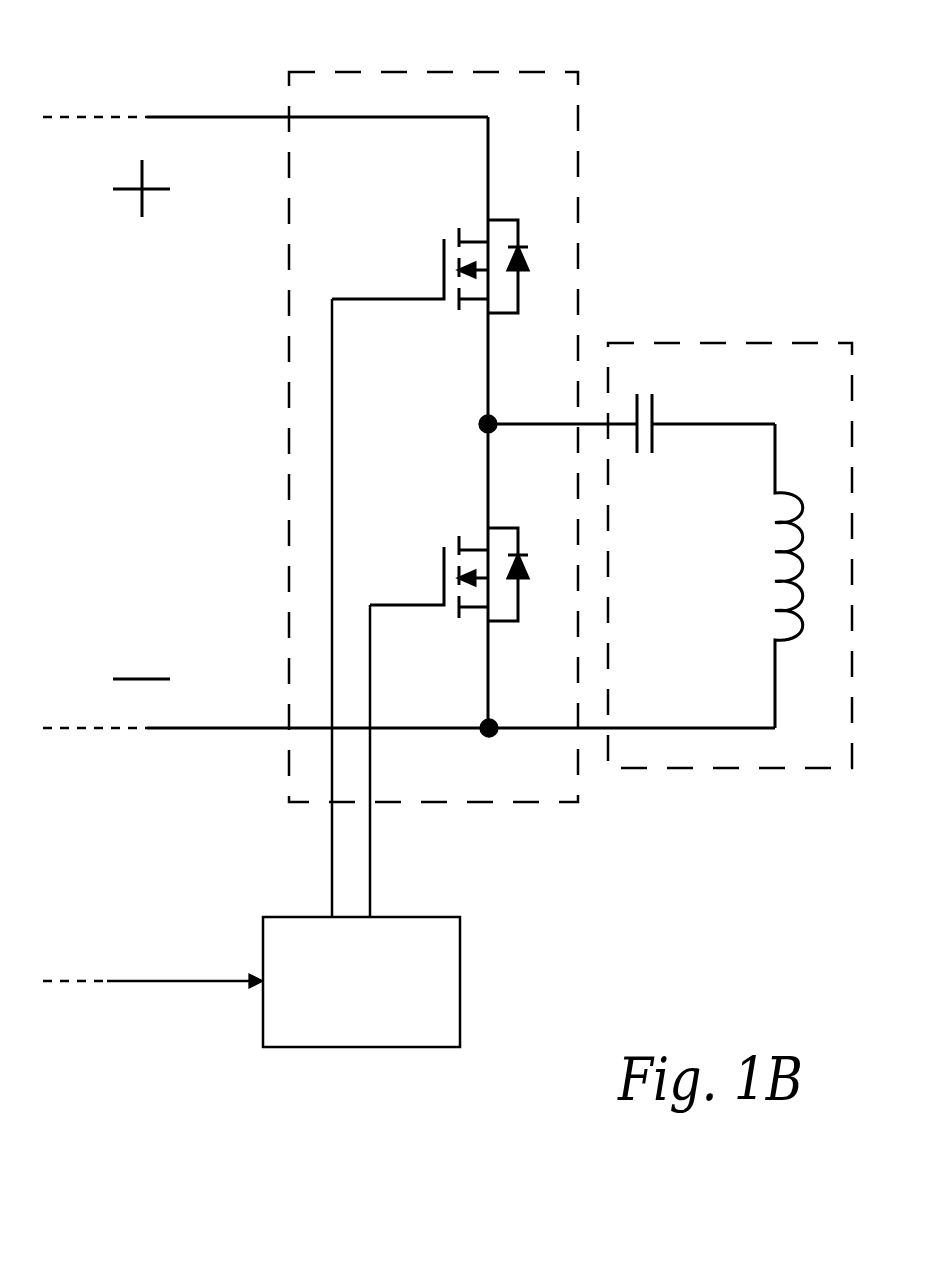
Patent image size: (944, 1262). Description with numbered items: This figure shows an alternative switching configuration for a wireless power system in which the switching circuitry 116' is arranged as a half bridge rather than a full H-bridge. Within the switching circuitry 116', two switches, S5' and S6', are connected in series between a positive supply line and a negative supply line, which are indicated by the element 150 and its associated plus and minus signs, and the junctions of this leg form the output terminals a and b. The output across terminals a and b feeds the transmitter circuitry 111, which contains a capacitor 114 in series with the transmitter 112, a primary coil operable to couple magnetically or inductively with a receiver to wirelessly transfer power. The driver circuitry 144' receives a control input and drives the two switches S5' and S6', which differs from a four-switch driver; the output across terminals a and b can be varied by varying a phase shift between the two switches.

The power source / supply rails 150 is at (188, 117).
The switching circuitry 116' is at (433, 405).
The transmitter circuitry 111 is at (670, 525).
The capacitor 114 is at (660, 440).
The transmitter 112 is at (798, 567).
The driver circuitry 144' is at (283, 673).